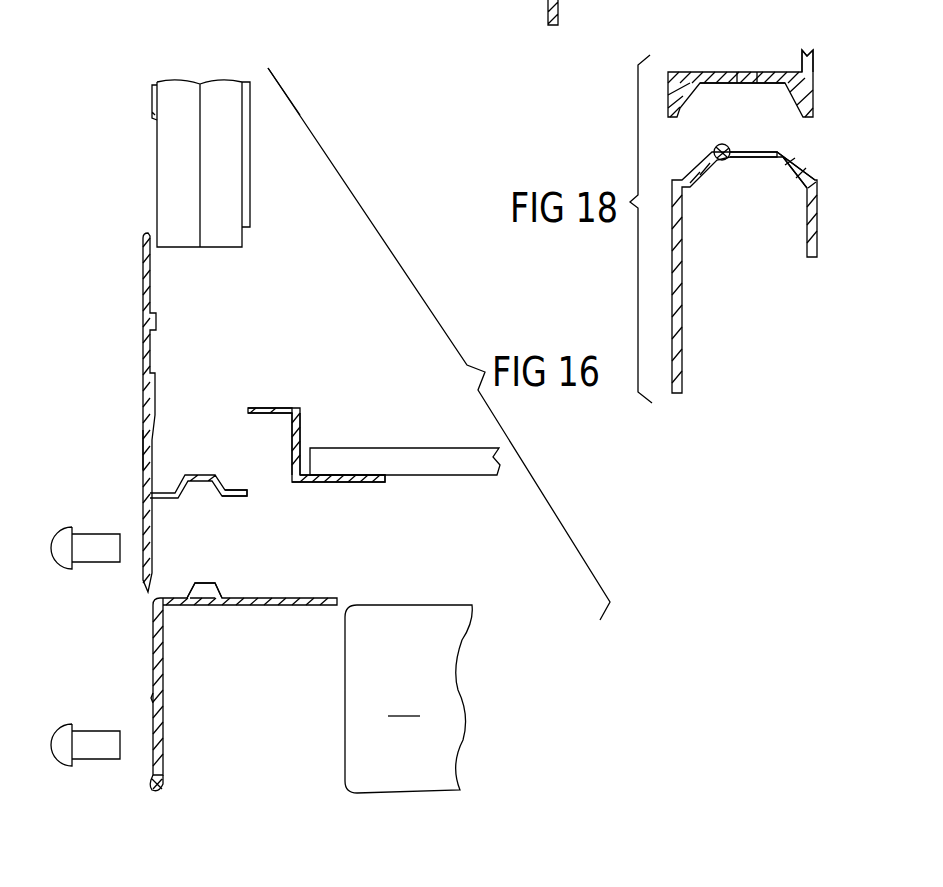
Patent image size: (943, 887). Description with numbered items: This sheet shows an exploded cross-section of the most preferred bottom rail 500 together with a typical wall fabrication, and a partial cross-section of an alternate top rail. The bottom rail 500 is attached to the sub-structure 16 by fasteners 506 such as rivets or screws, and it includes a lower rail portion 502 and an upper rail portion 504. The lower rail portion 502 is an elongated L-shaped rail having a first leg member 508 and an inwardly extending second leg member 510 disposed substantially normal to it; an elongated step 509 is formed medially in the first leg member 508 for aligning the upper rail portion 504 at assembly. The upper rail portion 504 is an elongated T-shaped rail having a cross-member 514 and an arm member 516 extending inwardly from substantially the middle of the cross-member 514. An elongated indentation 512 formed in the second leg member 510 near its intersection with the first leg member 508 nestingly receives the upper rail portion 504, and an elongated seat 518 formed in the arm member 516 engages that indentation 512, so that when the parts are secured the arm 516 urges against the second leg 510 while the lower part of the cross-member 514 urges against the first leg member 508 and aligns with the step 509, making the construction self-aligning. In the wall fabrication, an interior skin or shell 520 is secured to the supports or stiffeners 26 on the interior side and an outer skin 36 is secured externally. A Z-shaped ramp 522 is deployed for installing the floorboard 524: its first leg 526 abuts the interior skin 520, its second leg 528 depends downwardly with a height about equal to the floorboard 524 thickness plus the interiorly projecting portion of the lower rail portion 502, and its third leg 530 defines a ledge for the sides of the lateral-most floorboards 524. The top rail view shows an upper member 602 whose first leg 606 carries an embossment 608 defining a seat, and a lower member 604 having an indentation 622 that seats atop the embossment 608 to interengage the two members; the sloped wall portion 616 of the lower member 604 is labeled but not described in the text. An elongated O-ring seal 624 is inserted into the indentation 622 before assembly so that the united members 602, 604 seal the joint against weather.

In FIG. 16, the sub-structure 16 is at (408, 699).
In FIG. 16, the supports or stiffeners 26 is at (232, 112).
In FIG. 16, the outer skin 36 is at (150, 102).
In FIG. 16, the bottom rail 500 is at (518, 680).
In FIG. 16, the lower rail portion 502 is at (150, 713).
In FIG. 16, the upper rail portion 504 is at (148, 305).
In FIG. 16, the fasteners 506 is at (88, 534).
In FIG. 16, the first leg member 508 is at (165, 780).
In FIG. 16, the step 509 is at (152, 700).
In FIG. 16, the second leg member 510 is at (305, 598).
In FIG. 16, the indentation 512 is at (197, 582).
In FIG. 16, the cross-member 514 is at (150, 447).
In FIG. 16, the arm member 516 is at (232, 496).
In FIG. 16, the seat 518 is at (193, 478).
In FIG. 16, the interior skin or shell 520 is at (253, 210).
In FIG. 16, the Z-shaped ramp 522 is at (293, 405).
In FIG. 16, the floorboard 524 is at (405, 448).
In FIG. 16, the first leg 526 is at (272, 408).
In FIG. 16, the second leg 528 is at (302, 428).
In FIG. 16, the third leg 530 is at (360, 482).
In FIG. 18, the upper member 602 is at (815, 63).
In FIG. 18, the lower member 604 is at (683, 312).
In FIG. 18, the first leg 606 is at (704, 72).
In FIG. 18, the embossment 608 is at (763, 97).
In FIG. 18, the sloped wall 616 is at (778, 147).
In FIG. 18, the indentation 622 is at (750, 160).
In FIG. 18, the seal 624 is at (714, 146).